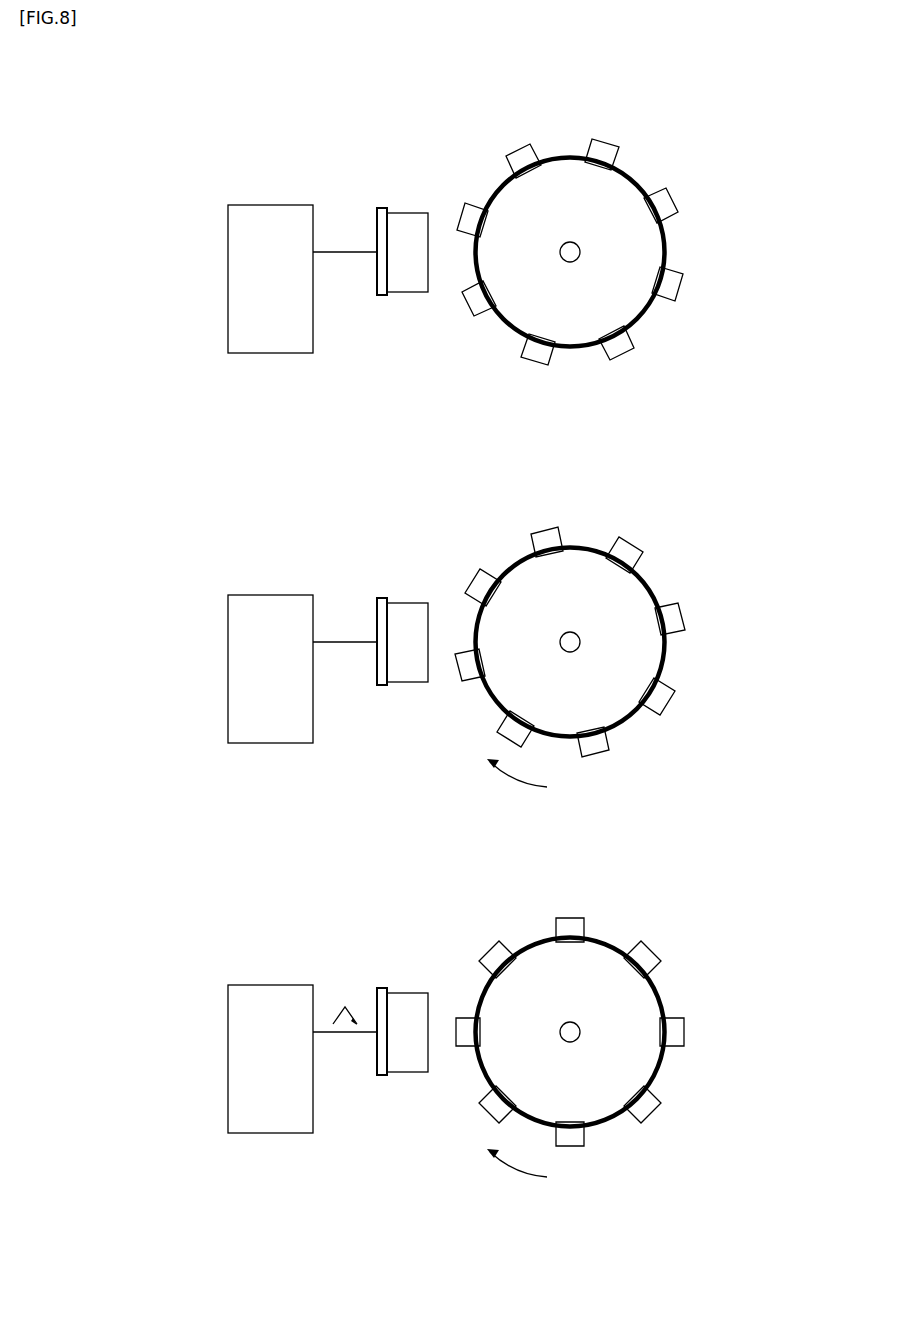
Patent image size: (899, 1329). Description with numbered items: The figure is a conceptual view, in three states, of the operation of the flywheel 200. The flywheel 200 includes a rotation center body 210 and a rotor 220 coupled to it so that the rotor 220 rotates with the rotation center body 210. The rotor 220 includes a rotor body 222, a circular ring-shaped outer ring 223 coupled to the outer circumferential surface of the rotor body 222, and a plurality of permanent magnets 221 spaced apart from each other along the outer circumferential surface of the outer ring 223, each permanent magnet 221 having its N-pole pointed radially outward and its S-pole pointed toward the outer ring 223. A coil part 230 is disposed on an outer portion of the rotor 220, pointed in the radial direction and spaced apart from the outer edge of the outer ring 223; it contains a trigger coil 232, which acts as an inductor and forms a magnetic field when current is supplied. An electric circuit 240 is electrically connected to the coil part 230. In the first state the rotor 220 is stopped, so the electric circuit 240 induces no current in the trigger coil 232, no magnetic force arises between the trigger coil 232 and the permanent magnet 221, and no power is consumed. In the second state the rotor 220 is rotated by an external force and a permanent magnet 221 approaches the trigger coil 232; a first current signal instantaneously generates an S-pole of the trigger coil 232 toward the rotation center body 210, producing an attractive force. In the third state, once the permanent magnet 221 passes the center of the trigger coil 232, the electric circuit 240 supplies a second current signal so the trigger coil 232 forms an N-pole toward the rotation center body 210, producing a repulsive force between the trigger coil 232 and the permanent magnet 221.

The flywheel 200 is at (289, 156).
The rotation center body 210 is at (581, 250).
The rotor 220 is at (563, 63).
The permanent magnet 221 is at (470, 205).
The rotor body 222 is at (557, 155).
The outer ring 223 is at (500, 183).
The coil part 230 is at (380, 300).
The trigger coil 232 is at (412, 282).
The electric circuit 240 is at (267, 340).